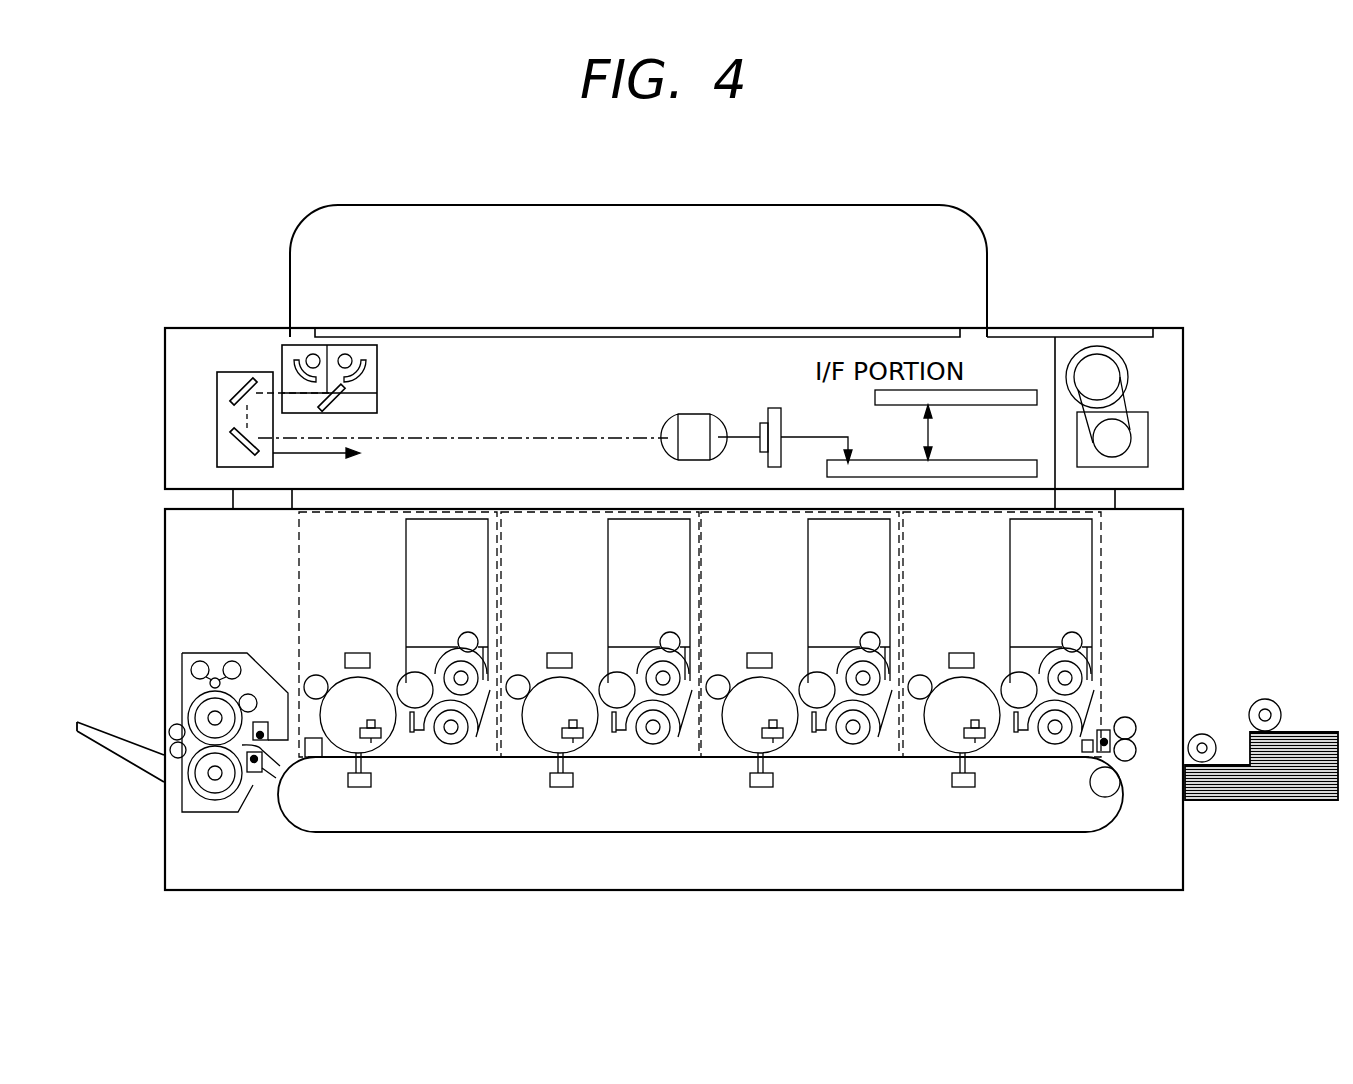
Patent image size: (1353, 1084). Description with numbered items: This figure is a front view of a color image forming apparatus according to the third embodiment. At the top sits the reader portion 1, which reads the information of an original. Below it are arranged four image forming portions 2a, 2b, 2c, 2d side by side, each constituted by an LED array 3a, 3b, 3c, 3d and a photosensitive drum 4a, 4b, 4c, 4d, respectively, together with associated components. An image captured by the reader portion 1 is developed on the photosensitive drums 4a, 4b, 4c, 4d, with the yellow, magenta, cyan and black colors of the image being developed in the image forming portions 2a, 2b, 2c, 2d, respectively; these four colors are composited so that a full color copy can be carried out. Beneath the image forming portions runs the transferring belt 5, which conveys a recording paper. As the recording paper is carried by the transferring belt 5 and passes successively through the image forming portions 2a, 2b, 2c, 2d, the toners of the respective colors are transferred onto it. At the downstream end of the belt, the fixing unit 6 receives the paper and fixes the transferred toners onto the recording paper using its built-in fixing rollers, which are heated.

The reader portion 1 is at (1073, 300).
The image forming portion 2a is at (1043, 726).
The image forming portion 2b is at (841, 726).
The image forming portion 2c is at (641, 726).
The image forming portion 2d is at (439, 726).
The LED array 3a is at (949, 633).
The LED array 3b is at (747, 633).
The LED array 3c is at (547, 633).
The LED array 3d is at (345, 633).
The photosensitive drum 4a is at (963, 675).
The photosensitive drum 4b is at (762, 675).
The photosensitive drum 4c is at (561, 675).
The photosensitive drum 4d is at (360, 675).
The transferring belt 5 is at (1057, 833).
The fixing unit 6 is at (208, 640).